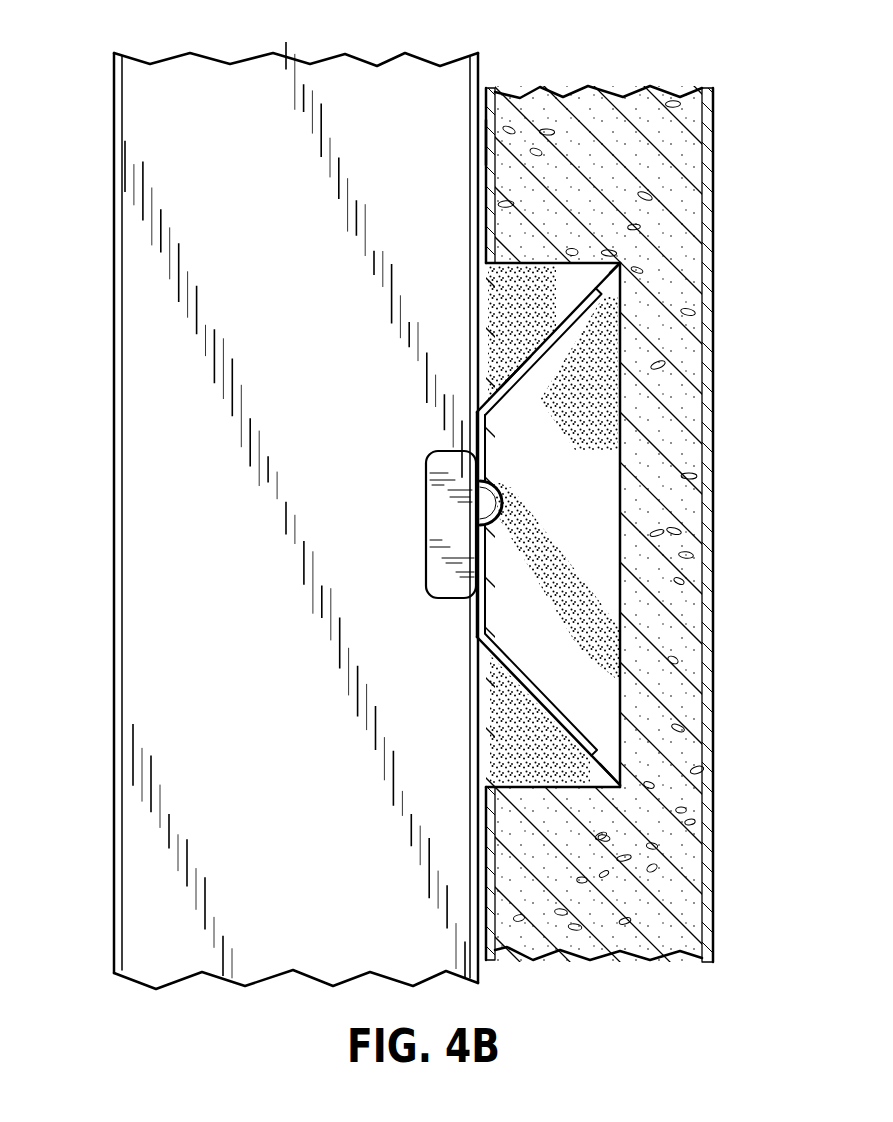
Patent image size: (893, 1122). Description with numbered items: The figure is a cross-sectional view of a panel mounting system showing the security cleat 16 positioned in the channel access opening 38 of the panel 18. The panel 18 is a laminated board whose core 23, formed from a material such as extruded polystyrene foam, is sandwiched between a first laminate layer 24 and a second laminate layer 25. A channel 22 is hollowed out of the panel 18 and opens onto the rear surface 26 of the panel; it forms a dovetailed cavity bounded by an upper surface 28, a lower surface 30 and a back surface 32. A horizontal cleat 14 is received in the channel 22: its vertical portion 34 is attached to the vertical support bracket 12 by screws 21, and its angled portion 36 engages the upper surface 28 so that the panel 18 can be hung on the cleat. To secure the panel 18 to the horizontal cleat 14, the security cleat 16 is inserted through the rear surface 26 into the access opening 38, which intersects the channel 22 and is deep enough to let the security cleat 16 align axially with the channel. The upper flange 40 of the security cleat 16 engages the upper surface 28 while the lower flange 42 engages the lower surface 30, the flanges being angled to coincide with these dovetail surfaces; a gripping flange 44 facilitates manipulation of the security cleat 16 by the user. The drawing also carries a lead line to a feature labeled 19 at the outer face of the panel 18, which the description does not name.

The vertical support bracket 12 is at (114, 68).
The horizontal cleat 14 is at (574, 520).
The security cleat 16 is at (434, 525).
The panel 18 is at (446, 487).
The exterior wall surface 19 is at (715, 624).
The screws 21 is at (492, 508).
The channel 22 is at (556, 581).
The core 23 is at (583, 100).
The first laminate layer 24 is at (707, 88).
The second laminate layer 25 is at (491, 88).
The rear surface 26 is at (488, 140).
The upper surface 28 is at (606, 286).
The lower surface 30 is at (597, 762).
The back surface 32 is at (622, 536).
The vertical portion 34 is at (485, 576).
The angled portion 36 is at (512, 381).
The channel access opening 38 is at (507, 302).
The upper flange 40 is at (510, 376).
The lower flange 42 is at (515, 670).
The gripping flange 44 is at (434, 496).